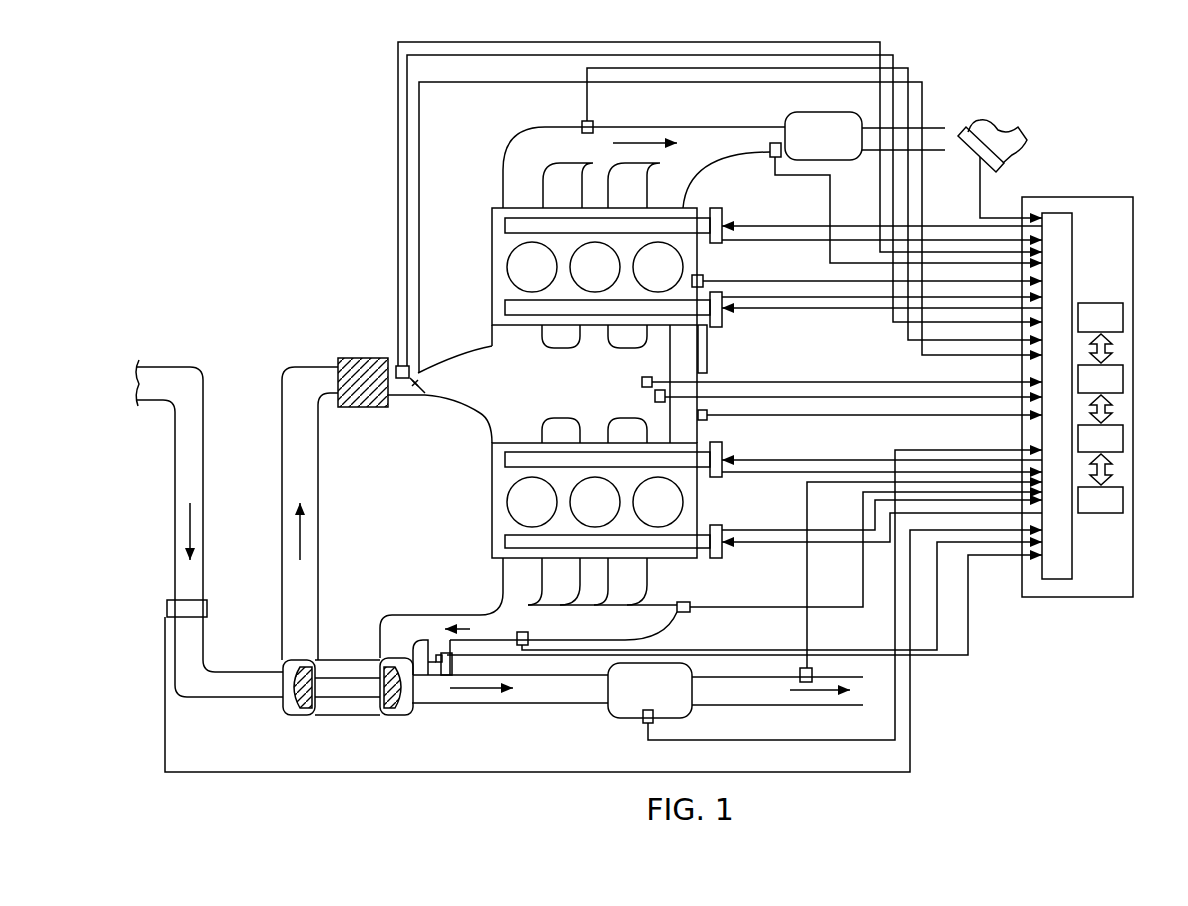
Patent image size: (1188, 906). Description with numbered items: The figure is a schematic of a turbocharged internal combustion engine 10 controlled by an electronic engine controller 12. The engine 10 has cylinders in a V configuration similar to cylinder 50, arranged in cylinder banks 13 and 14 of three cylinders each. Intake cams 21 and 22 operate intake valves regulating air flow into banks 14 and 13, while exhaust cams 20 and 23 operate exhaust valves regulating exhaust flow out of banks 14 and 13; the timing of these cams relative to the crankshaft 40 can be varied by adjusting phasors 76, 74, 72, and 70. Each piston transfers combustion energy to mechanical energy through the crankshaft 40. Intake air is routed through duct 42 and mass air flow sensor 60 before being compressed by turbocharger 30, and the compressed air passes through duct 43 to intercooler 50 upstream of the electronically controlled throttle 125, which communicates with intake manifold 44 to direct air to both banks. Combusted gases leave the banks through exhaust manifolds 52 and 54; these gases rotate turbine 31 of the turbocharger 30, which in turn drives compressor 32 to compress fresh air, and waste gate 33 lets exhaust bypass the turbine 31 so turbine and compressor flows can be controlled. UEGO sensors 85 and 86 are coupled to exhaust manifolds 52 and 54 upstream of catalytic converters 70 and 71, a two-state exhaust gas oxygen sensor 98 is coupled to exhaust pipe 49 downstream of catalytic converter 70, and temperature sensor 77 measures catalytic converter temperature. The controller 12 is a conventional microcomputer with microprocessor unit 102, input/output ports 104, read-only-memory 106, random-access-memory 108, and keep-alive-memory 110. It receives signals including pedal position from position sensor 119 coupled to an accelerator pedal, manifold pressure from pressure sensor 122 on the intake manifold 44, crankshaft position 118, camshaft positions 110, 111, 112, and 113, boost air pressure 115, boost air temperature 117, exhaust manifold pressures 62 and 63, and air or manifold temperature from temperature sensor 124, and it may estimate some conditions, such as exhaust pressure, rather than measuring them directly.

The internal combustion engine 10 is at (707, 340).
The electronic engine controller 12 is at (1068, 598).
The cylinder bank 13 is at (698, 560).
The cylinder bank 14 is at (692, 209).
The exhaust cam 20 is at (504, 228).
The intake cam 21 is at (504, 304).
The intake cam 22 is at (504, 458).
The exhaust cam 23 is at (504, 540).
The turbocharger 30 is at (345, 718).
The turbine 31 is at (405, 705).
The compressor 32 is at (290, 708).
The waste gate 33 is at (454, 668).
The crankshaft 40 is at (718, 381).
The duct 42 is at (179, 470).
The duct 43 is at (289, 471).
The intake manifold 44 is at (554, 391).
The exhaust pipe 49 is at (716, 698).
The cylinder / intercooler 50 is at (362, 408).
The exhaust manifold 52 is at (490, 600).
The exhaust manifold 54 is at (663, 127).
The mass air flow sensor 60 is at (167, 600).
The exhaust manifold pressure sensor 62 is at (688, 612).
The exhaust manifold pressure sensor 63 is at (770, 148).
The catalytic converter / phasor 70 is at (724, 550).
The catalytic converter 71 is at (818, 143).
The phasor 72 is at (724, 450).
The phasor 74 is at (724, 318).
The phasor 76 is at (724, 222).
The temperature sensor 77 is at (642, 720).
The UEGO sensor 85 is at (528, 635).
The UEGO sensor 86 is at (582, 125).
The two-state exhaust gas oxygen sensor 98 is at (812, 668).
The microprocessor unit 102 is at (1124, 378).
The input/output ports 104 is at (1072, 574).
The read-only-memory 106 is at (1100, 302).
The random-access-memory 108 is at (1124, 441).
The keep-alive-memory 110 is at (1100, 514).
The camshaft position signal 111 is at (726, 310).
The camshaft position signal 112 is at (704, 279).
The camshaft position signal 113 is at (726, 528).
The boost air pressure sensor 115 is at (408, 362).
The boost air temperature sensor 117 is at (398, 364).
The crankshaft position sensor 118 is at (708, 418).
The position sensor 119 is at (1005, 167).
The pressure sensor 122 is at (641, 380).
The temperature sensor 124 is at (654, 398).
The electronically controlled throttle 125 is at (420, 372).